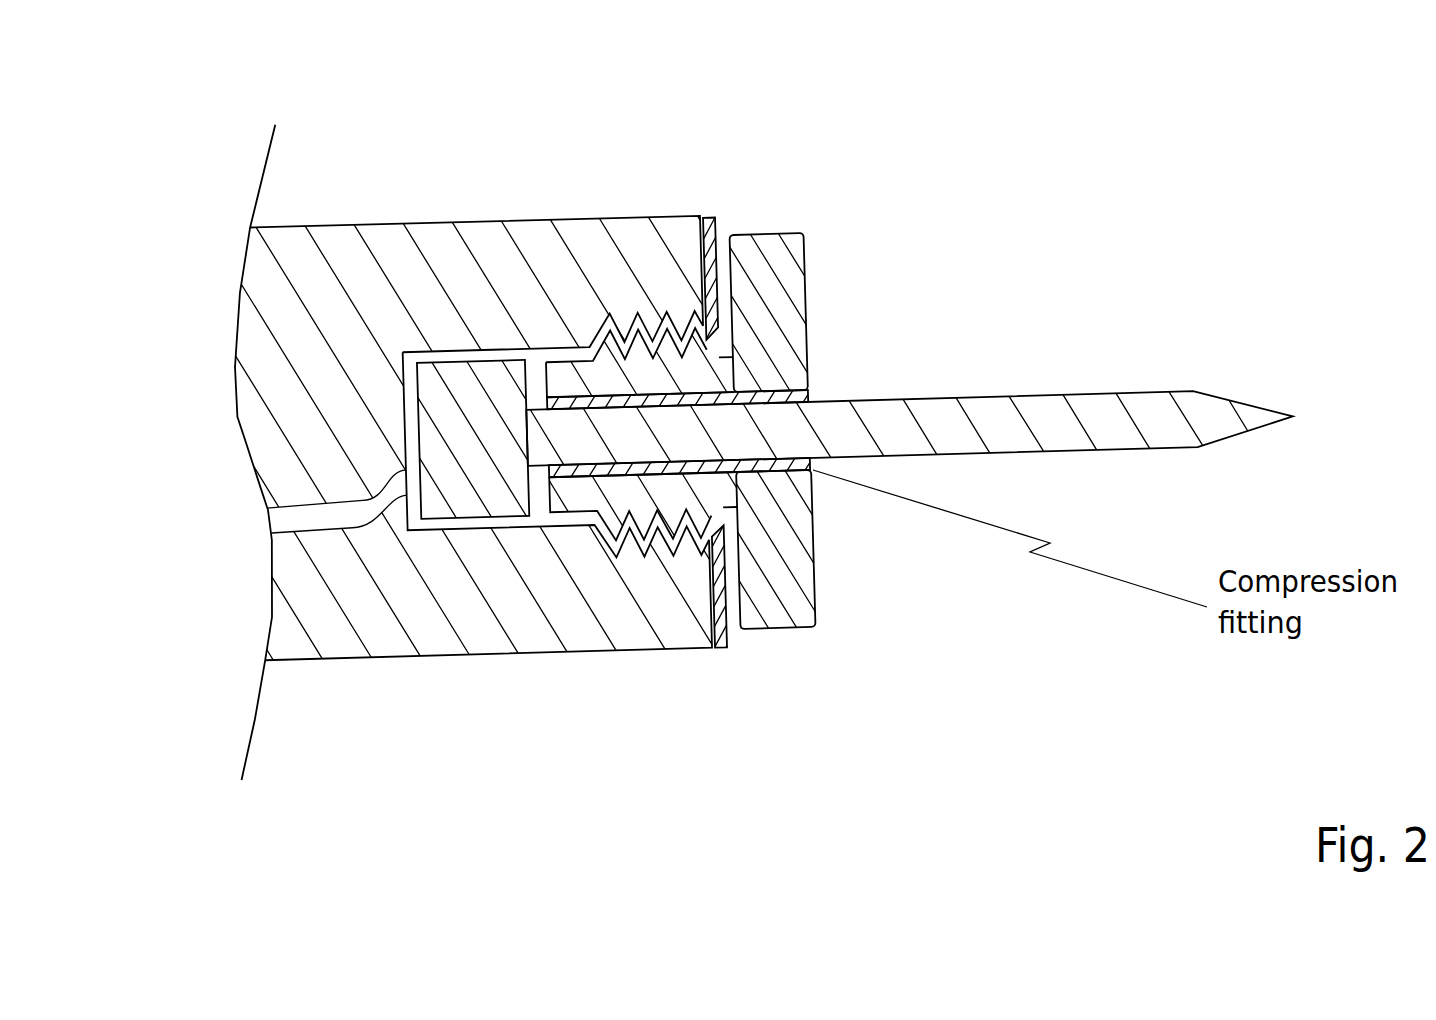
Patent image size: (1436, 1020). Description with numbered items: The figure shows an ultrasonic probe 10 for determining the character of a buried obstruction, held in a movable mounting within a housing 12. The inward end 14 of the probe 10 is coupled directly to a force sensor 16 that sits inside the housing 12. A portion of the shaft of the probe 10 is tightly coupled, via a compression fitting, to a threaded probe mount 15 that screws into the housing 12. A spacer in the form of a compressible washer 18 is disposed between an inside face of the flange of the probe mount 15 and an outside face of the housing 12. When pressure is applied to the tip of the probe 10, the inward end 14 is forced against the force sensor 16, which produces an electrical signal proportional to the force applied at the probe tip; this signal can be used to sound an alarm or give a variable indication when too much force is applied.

The ultrasonic probe 10 is at (941, 408).
The housing 12 is at (482, 622).
The inward end 14 is at (527, 440).
The probe mount 15 is at (813, 582).
The force sensor 16 is at (465, 387).
The compressible washer 18 is at (730, 648).